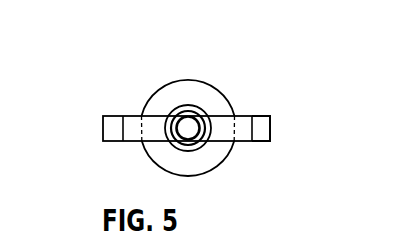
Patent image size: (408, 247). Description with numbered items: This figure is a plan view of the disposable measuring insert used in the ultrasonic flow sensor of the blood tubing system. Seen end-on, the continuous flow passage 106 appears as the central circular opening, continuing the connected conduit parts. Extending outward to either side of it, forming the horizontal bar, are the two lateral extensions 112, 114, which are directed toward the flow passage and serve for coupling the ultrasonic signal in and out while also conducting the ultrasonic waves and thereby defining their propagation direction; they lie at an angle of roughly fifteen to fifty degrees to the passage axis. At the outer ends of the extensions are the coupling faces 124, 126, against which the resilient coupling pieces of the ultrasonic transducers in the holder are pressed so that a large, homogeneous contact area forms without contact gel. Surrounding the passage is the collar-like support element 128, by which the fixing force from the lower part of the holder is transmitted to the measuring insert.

The flow passage 106 is at (183, 128).
The lateral extension 112 is at (243, 121).
The lateral extension 114 is at (134, 122).
The coupling face 124 is at (265, 122).
The coupling face 126 is at (113, 122).
The support element 128 is at (200, 93).